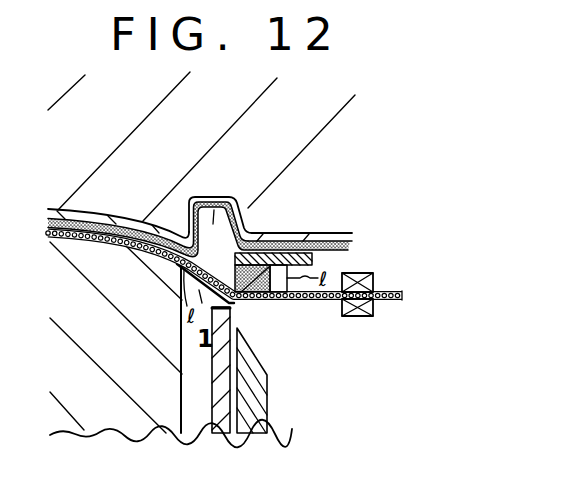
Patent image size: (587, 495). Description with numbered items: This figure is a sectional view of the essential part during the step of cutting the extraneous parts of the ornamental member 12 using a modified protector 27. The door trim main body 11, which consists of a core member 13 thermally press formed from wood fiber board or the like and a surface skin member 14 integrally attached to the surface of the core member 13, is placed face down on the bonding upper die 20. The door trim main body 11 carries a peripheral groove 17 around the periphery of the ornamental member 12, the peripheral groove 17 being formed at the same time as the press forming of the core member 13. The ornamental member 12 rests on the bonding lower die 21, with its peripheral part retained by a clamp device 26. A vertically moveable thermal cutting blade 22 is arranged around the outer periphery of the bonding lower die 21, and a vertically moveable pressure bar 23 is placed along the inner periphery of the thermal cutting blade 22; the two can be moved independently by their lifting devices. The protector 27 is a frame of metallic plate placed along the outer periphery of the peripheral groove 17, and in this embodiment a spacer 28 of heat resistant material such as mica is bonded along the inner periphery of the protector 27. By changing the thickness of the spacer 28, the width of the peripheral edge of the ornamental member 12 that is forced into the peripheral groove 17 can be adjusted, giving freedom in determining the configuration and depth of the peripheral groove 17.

The door trim main body 11 is at (278, 242).
The ornamental member 12 is at (322, 299).
The core member 13 is at (317, 232).
The surface skin member 14 is at (348, 250).
The peripheral groove 17 is at (221, 212).
The bonding upper die 20 is at (108, 126).
The bonding lower die 21 is at (112, 355).
The thermal cutting blade 22 is at (257, 372).
The pressure bar 23 is at (194, 433).
The clamp device 26 is at (371, 282).
The protector 27 is at (288, 232).
The spacer 28 is at (272, 302).